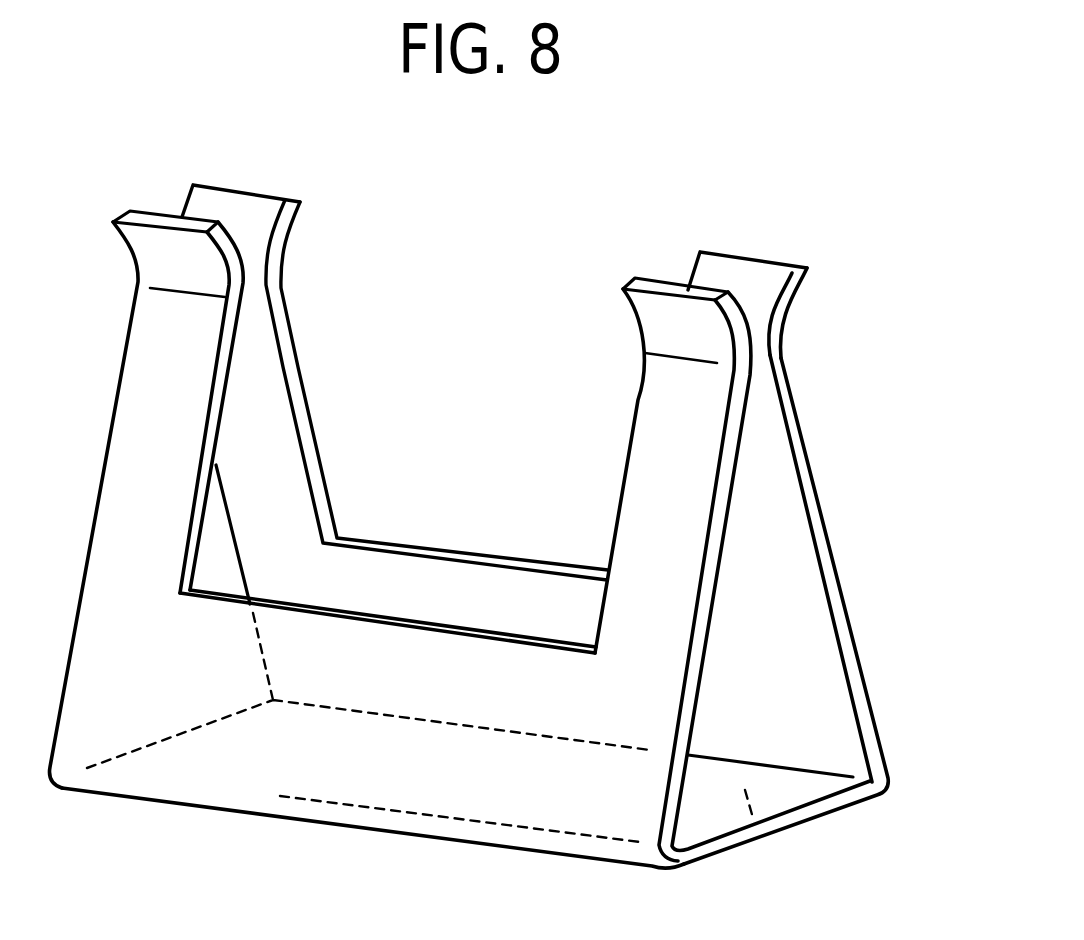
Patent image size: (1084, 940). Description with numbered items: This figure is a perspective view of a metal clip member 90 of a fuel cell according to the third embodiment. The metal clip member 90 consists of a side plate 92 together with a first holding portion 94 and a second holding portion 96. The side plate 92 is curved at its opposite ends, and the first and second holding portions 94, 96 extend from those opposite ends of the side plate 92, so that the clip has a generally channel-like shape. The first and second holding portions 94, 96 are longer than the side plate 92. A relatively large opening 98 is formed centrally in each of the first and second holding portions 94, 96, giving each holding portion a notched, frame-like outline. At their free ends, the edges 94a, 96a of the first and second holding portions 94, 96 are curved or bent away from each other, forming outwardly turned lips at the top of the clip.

The metal clip member 90 is at (836, 135).
The side plate 92 is at (757, 820).
The first holding portion 94 is at (843, 615).
The edge of first holding portion 94a is at (763, 277).
The second holding portion 96 is at (483, 757).
The edge of second holding portion 96a is at (667, 325).
The opening 98 is at (412, 617).